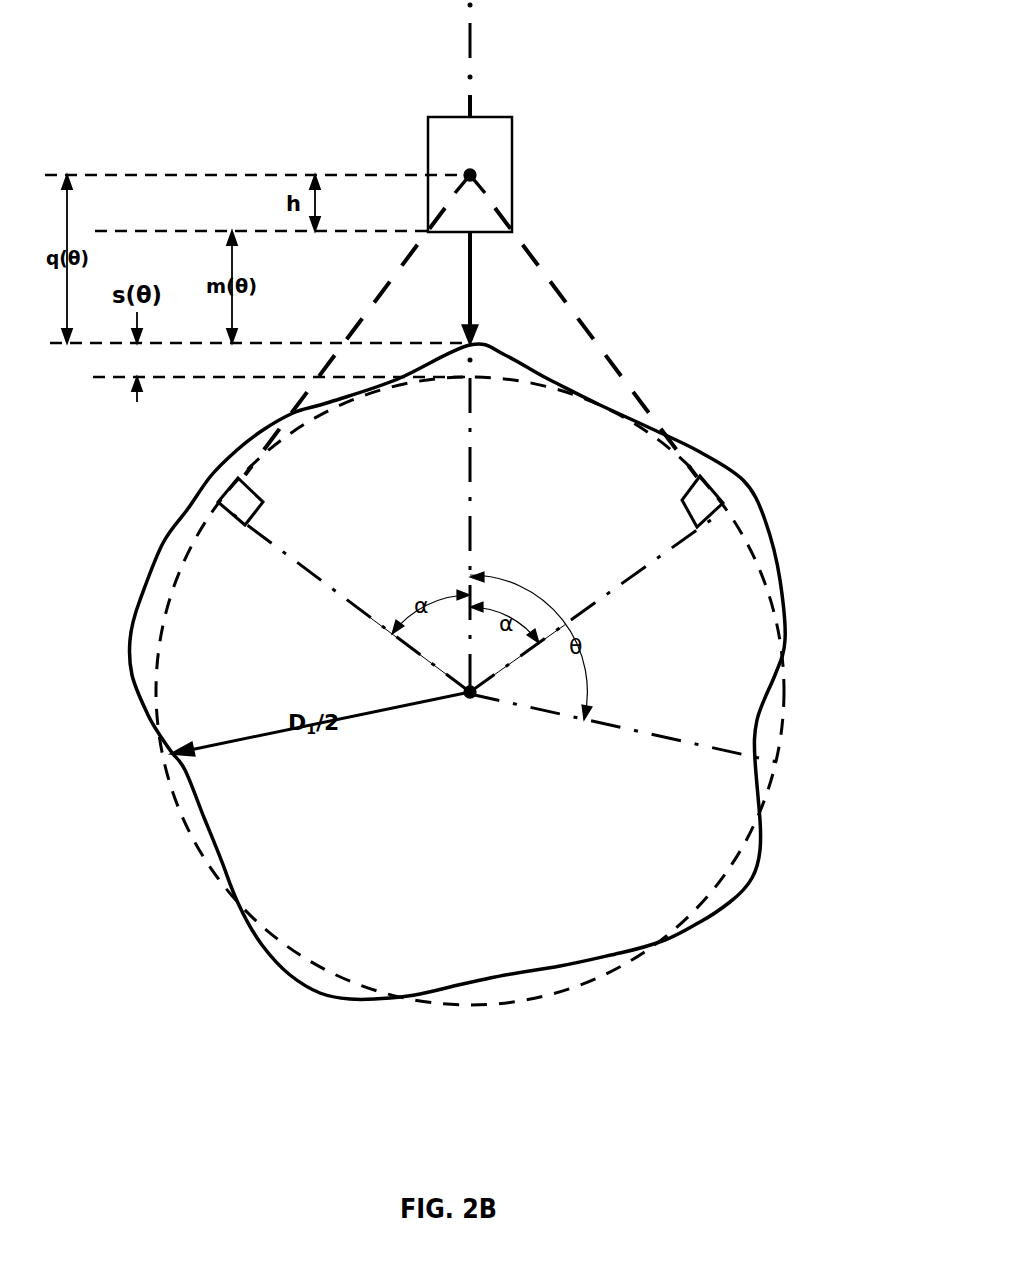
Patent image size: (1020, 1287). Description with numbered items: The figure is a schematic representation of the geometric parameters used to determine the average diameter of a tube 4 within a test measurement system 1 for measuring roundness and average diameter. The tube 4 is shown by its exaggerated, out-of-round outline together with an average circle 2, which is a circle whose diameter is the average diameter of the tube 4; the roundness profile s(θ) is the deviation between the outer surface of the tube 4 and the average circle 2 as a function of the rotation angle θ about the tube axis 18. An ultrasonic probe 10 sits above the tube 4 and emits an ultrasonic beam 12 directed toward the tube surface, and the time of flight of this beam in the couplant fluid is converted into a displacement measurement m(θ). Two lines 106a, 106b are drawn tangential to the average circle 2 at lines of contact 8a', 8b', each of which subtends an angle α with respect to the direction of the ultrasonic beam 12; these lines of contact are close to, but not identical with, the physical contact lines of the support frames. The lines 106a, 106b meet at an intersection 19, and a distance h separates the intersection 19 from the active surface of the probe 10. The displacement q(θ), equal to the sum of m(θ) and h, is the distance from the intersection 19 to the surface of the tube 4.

The test measurement system 1 is at (758, 190).
The average circle 2 is at (176, 802).
The tube 4 is at (138, 602).
The line of contact 8a' is at (195, 497).
The line of contact 8b' is at (753, 494).
The ultrasonic probe 10 is at (434, 148).
The ultrasonic beam 12 is at (466, 306).
The tube axis 18 is at (470, 702).
The intersection 19 is at (477, 172).
The line 106a is at (383, 276).
The line 106b is at (556, 268).